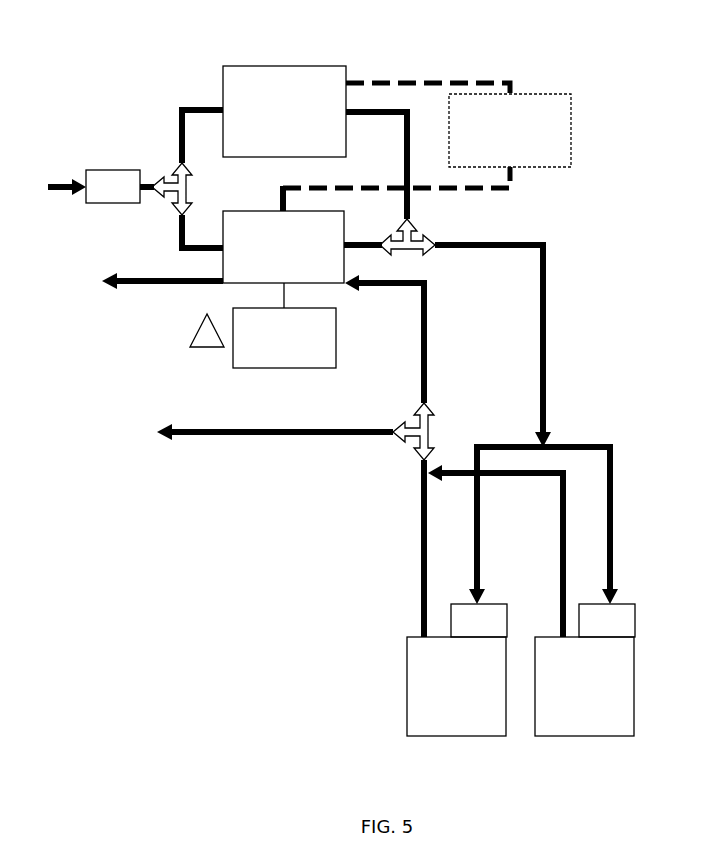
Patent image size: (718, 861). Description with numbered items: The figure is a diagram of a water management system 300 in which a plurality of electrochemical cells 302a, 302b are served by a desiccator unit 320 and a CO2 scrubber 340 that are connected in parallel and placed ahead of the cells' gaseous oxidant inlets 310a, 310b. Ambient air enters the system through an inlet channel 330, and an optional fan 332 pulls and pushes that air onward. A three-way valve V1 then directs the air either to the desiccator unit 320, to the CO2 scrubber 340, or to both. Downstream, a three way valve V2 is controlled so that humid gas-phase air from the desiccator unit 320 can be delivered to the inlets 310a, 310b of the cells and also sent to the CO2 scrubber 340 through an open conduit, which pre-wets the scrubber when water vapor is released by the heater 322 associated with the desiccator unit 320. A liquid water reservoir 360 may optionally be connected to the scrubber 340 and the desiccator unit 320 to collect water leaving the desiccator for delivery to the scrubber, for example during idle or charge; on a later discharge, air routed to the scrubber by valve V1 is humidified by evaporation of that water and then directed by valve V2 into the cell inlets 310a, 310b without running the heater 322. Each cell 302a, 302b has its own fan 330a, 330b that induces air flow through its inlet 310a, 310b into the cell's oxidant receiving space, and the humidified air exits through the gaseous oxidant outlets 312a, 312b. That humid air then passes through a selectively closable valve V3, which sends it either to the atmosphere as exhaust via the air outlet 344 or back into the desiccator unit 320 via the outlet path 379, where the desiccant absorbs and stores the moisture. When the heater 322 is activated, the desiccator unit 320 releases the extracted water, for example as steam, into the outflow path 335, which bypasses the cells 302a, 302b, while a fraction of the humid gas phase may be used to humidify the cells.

The water management system 300 is at (121, 63).
The inlet channel 330 is at (76, 186).
The fan 332 is at (116, 203).
The three-way valve V1 is at (192, 186).
The CO2 scrubber 340 is at (268, 129).
The liquid water reservoir 360 is at (494, 149).
The desiccator unit 320 is at (268, 265).
The heater 322 is at (268, 369).
The three way valve V2 is at (414, 233).
The outflow path 335 is at (114, 286).
The outlet path 379 is at (428, 359).
The selectively closable valve V3 is at (431, 431).
The air outlet 344 is at (173, 440).
The gaseous oxidant outlet 312a is at (424, 553).
The gaseous oxidant outlet 312b is at (563, 512).
The gaseous oxidant inlet 310a is at (478, 548).
The gaseous oxidant inlet 310b is at (611, 508).
The fan 330a is at (488, 620).
The fan 330b is at (617, 620).
The electrochemical cell 302a is at (425, 738).
The electrochemical cell 302b is at (553, 738).